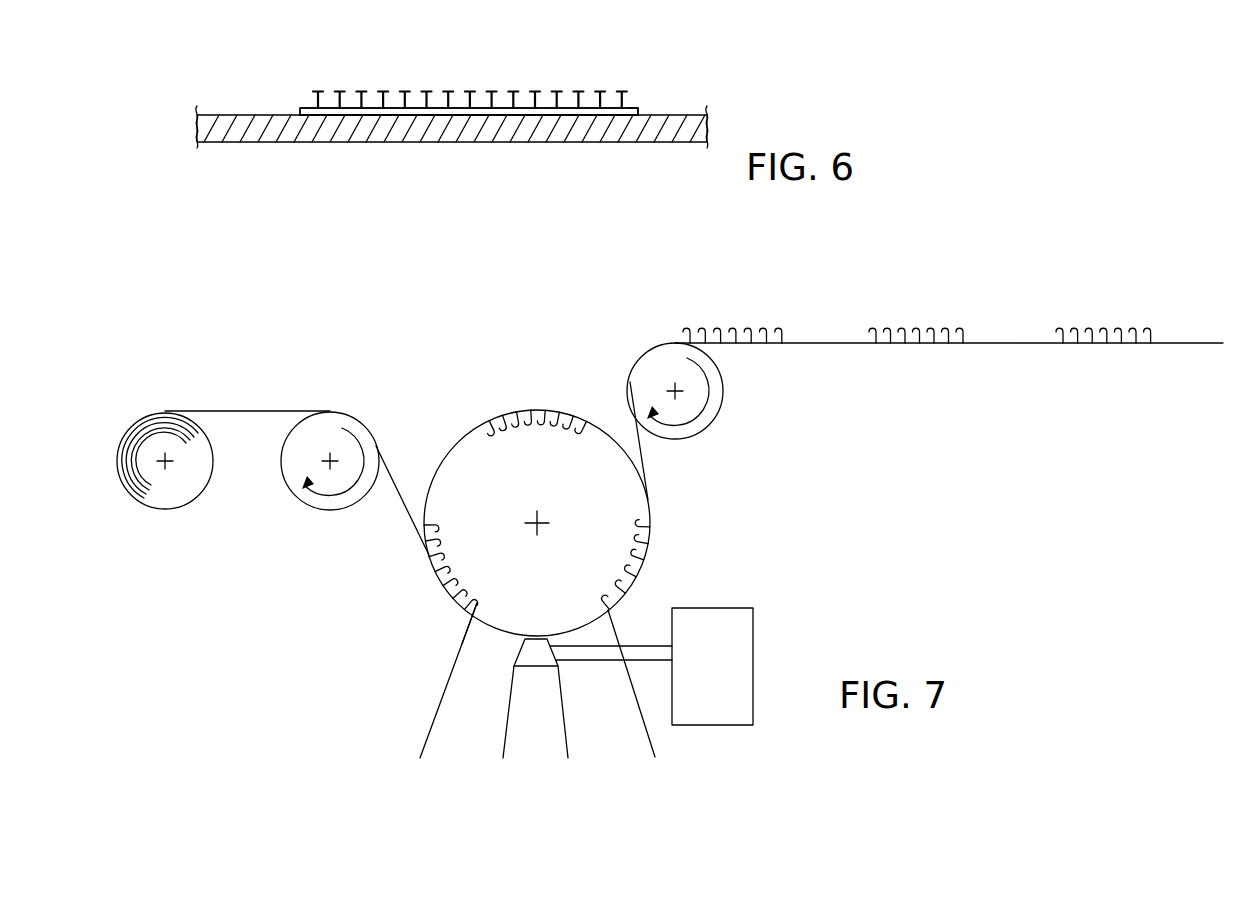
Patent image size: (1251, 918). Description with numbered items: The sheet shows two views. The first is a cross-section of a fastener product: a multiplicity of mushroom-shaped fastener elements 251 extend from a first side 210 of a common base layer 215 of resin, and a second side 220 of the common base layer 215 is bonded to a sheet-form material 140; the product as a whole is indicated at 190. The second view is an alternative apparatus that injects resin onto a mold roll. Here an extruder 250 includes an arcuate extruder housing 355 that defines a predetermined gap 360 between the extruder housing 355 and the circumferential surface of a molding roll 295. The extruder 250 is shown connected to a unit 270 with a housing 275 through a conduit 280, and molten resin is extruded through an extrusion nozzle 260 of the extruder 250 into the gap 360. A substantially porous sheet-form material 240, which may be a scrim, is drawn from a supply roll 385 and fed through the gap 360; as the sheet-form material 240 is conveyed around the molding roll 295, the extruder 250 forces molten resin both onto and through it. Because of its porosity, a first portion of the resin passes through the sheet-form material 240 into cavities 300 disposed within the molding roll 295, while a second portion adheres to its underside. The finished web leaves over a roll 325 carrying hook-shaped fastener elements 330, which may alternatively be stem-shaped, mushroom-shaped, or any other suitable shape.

In FIG. 6, the sheet-form material 140 is at (660, 133).
In FIG. 6, the hook fastener assembly 190 is at (624, 77).
In FIG. 6, the first side 210 is at (305, 108).
In FIG. 6, the common base layer 215 is at (640, 112).
In FIG. 6, the second side 220 is at (333, 118).
In FIG. 6, the mushroom-shaped fastener elements 251 is at (580, 90).
In FIG. 7, the sheet-form material 240 is at (235, 410).
In FIG. 7, the extruder 250 is at (500, 738).
In FIG. 7, the extrusion nozzle 260 is at (528, 655).
In FIG. 7, the extruder 270 is at (754, 676).
In FIG. 7, the extruder housing 275 is at (694, 718).
In FIG. 7, the conduit 280 is at (640, 645).
In FIG. 7, the molding roll 295 is at (617, 510).
In FIG. 7, the cavities 300 is at (636, 562).
In FIG. 7, the take-off roll 325 is at (723, 391).
In FIG. 7, the hook-shaped fastener elements 330 is at (917, 330).
In FIG. 7, the arcuate extruder housing 355 is at (425, 727).
In FIG. 7, the gap 360 is at (474, 606).
In FIG. 7, the supply roll 385 is at (165, 507).